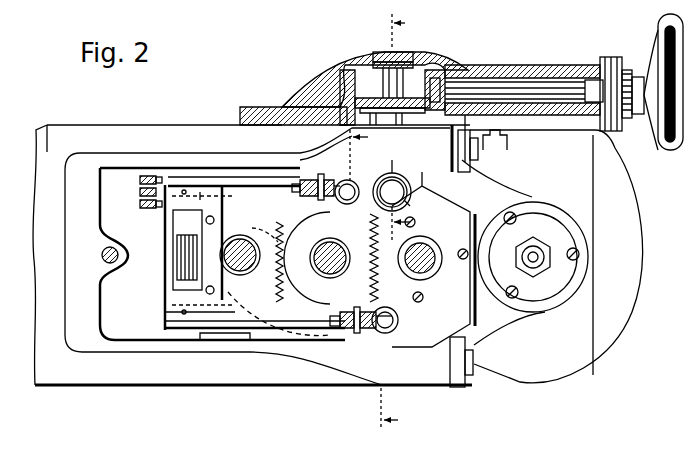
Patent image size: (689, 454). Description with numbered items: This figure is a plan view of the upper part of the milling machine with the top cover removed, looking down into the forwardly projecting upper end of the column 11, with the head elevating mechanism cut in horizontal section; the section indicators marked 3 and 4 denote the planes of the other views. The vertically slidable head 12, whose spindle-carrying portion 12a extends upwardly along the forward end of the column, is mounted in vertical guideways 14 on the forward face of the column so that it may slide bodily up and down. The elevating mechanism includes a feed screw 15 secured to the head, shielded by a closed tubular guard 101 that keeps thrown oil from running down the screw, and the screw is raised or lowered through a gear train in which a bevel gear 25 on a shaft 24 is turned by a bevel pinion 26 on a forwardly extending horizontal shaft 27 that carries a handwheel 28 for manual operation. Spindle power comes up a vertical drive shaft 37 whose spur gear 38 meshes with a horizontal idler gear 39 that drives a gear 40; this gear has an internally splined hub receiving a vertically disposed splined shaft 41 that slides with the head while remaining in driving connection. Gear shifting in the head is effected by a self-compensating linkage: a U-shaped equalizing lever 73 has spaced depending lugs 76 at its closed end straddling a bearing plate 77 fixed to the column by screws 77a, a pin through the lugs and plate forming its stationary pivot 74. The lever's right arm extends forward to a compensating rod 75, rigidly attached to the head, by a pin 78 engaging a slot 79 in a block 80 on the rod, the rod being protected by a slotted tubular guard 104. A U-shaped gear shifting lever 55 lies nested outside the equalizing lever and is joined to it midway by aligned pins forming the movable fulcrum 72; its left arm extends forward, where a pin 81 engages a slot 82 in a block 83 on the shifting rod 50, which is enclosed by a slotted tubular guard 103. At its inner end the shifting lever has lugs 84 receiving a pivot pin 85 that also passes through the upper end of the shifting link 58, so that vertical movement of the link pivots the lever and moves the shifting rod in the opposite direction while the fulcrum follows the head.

The column 11 is at (42, 135).
The head 12 is at (544, 386).
The spindle-carrying portion 12a is at (588, 156).
The vertical guideways 14 is at (447, 166).
The feed screw 15 is at (394, 187).
The shaft 24 is at (383, 72).
The bevel gear 25 is at (385, 86).
The bevel pinion 26 is at (438, 78).
The horizontal shaft 27 is at (476, 91).
The handwheel 28 is at (664, 41).
The drive shaft 37 is at (241, 252).
The spur gear 38 is at (283, 241).
The idler gear 39 is at (291, 278).
The gear 40 is at (388, 278).
The splined shaft 41 is at (431, 260).
The shifting rod 50 is at (389, 329).
The gear shifting lever 55 is at (165, 312).
The shifting link 58 is at (165, 176).
The movable pivot 72 is at (258, 202).
The equalizing lever 73 is at (312, 197).
The stationary pivot 74 is at (182, 272).
The compensating rod 75 is at (392, 194).
The depending lugs 76 is at (184, 189).
The bearing plate 77 is at (183, 218).
The screws 77a is at (417, 212).
The pin 78 is at (302, 169).
The slot 79 is at (347, 197).
The block 80 is at (324, 185).
The pin 81 is at (357, 331).
The slot 82 is at (347, 330).
The block 83 is at (368, 330).
The lugs 84 is at (150, 181).
The pivot pin 85 is at (150, 204).
The tubular guard 101 is at (389, 176).
The tubular guard 103 is at (381, 335).
The tubular guard 104 is at (342, 184).
The section line 3 is at (381, 280).
The section line 4 is at (402, 128).